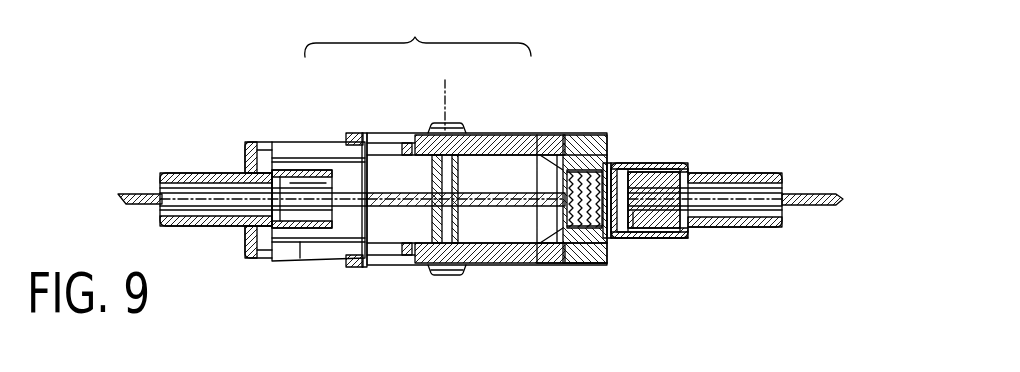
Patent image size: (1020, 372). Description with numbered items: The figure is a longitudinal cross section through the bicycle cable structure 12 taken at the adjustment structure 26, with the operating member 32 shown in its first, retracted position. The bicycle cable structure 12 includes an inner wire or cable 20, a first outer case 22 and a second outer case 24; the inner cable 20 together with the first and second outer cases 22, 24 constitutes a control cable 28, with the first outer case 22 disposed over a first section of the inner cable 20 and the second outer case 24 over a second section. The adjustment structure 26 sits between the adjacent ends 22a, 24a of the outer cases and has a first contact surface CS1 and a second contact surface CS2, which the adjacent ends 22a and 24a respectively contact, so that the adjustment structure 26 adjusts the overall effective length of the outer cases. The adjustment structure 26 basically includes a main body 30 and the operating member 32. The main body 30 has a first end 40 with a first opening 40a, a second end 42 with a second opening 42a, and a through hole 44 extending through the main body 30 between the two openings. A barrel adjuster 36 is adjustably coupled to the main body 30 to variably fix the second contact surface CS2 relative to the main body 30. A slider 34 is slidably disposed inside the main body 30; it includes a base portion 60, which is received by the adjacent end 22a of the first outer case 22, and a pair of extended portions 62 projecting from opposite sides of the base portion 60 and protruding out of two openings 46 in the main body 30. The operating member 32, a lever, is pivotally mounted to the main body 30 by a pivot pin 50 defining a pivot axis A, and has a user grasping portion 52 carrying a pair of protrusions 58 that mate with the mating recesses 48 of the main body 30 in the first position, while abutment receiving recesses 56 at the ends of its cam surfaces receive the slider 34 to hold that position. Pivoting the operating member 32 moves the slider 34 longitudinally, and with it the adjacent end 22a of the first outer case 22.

The bicycle cable structure 12 is at (218, 73).
The pivot axis A is at (445, 106).
The inner wire or cable 20 is at (210, 167).
The first outer case 22 is at (143, 183).
The second outer case 24 is at (723, 167).
The adjustment structure 26 is at (643, 312).
The control cable 28 is at (418, 192).
The adjacent end of first outer case 22a is at (177, 227).
The adjacent end of second outer case 24a is at (760, 228).
The main body 30 is at (495, 270).
The operating member 32 is at (547, 275).
The slider 34 is at (281, 260).
The barrel adjuster 36 is at (679, 240).
The first end 40 is at (262, 257).
The first opening 40a is at (238, 223).
The second end 42 is at (588, 152).
The second opening 42a is at (623, 165).
The through hole 44 is at (472, 162).
The openings 46 is at (398, 147).
The recesses 48 is at (567, 157).
The pivot pin 50 is at (450, 274).
The user grasping portion 52 is at (598, 270).
The abutment receiving recess 56 is at (348, 134).
The protrusions 58 is at (577, 152).
The base portion 60 is at (310, 252).
The extended portions 62 is at (323, 267).
The first contact surface CS1 is at (327, 182).
The second contact surface CS2 is at (633, 212).